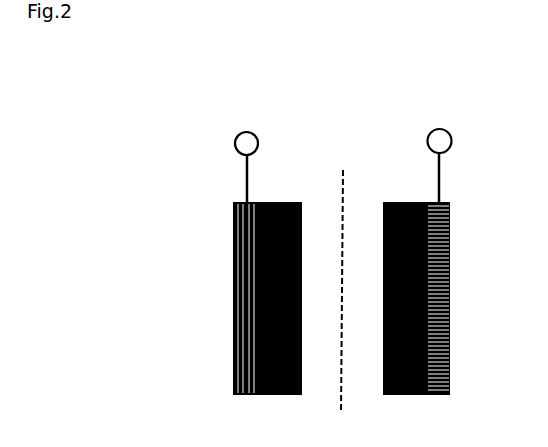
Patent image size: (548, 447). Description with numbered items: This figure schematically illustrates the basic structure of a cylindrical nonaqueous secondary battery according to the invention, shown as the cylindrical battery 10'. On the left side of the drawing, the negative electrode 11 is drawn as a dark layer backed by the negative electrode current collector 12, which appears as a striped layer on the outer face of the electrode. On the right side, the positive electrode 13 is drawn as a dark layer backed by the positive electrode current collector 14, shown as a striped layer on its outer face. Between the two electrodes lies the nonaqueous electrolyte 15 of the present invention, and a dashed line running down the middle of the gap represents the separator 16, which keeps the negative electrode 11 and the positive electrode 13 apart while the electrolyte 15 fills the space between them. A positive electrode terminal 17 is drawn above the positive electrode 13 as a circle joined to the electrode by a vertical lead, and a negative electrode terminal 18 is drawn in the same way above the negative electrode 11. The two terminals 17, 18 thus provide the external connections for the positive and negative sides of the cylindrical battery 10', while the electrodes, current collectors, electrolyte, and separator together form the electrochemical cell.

The cylindrical battery 10' is at (339, 246).
The negative electrode 11 is at (280, 396).
The negative electrode current collector 12 is at (233, 376).
The positive electrode 13 is at (404, 396).
The positive electrode current collector 14 is at (437, 396).
The nonaqueous electrolyte 15 is at (371, 302).
The separator 16 is at (343, 187).
The positive electrode terminal 17 is at (451, 140).
The negative electrode terminal 18 is at (258, 142).